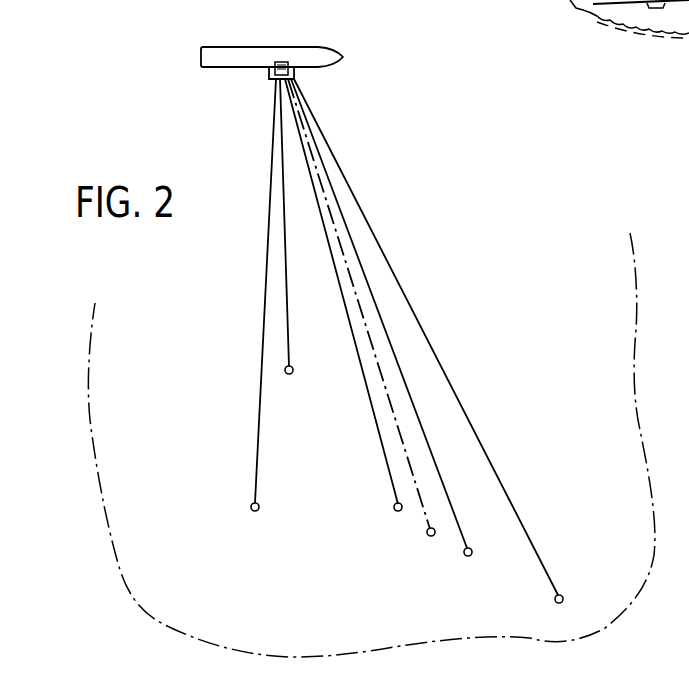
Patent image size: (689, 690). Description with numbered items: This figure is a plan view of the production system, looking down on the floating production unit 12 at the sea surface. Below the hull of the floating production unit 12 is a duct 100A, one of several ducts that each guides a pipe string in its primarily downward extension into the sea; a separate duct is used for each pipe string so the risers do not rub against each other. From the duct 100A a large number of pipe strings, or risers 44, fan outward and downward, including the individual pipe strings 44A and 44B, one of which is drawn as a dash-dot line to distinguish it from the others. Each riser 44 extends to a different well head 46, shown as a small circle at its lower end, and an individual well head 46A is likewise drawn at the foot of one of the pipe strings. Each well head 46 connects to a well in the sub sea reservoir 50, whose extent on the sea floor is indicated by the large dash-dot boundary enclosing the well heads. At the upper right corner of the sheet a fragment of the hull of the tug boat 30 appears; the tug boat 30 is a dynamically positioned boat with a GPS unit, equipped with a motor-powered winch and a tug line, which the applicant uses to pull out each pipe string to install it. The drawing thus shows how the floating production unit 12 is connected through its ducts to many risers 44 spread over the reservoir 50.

The vessel 12 is at (234, 47).
The sonar transducer unit 100A is at (277, 90).
The risers 44 is at (265, 285).
The pipe string 44A is at (393, 413).
The pipe string 44B is at (362, 376).
The well head 46 is at (287, 376).
The beam footprint 46A is at (428, 536).
The sub sea reservoir 50 is at (87, 370).
The tug boat 30 is at (572, 10).